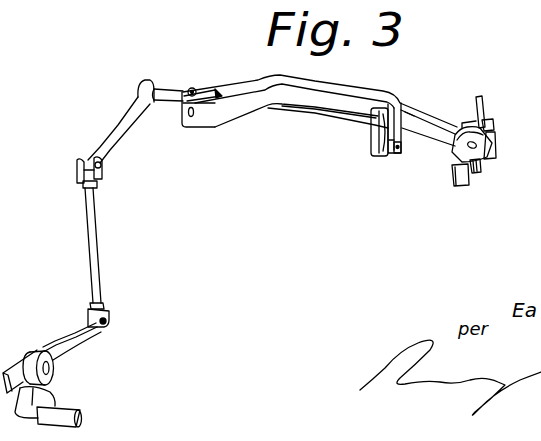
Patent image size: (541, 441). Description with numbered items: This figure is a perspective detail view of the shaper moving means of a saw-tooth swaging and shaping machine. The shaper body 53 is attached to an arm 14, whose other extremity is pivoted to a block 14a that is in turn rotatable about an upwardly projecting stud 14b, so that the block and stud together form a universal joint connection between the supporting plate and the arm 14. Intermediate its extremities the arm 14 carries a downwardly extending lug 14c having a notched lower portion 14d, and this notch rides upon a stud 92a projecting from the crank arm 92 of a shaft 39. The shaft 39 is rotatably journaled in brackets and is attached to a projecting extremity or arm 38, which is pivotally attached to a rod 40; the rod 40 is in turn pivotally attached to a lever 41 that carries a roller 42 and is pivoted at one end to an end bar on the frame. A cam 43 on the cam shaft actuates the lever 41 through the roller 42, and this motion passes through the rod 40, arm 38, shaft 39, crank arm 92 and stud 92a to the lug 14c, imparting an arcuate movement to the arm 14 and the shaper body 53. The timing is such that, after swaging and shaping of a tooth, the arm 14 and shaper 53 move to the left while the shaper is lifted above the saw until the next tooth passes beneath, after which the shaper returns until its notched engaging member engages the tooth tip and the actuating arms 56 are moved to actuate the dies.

The arm 14 is at (398, 98).
The block 14a is at (213, 90).
The stud 14b is at (195, 88).
The downwardly extending lug 14c is at (409, 130).
The notched lower portion 14d is at (399, 157).
The projecting extremity or arm 38 is at (111, 122).
The shaft 39 is at (172, 94).
The rod 40 is at (91, 244).
The lever 41 is at (60, 345).
The roller 42 is at (52, 370).
The cam 43 is at (44, 397).
The shaper body 53 is at (478, 142).
The actuating arms 56 is at (484, 111).
The crank arm 92 is at (371, 147).
The stud 92a is at (397, 155).